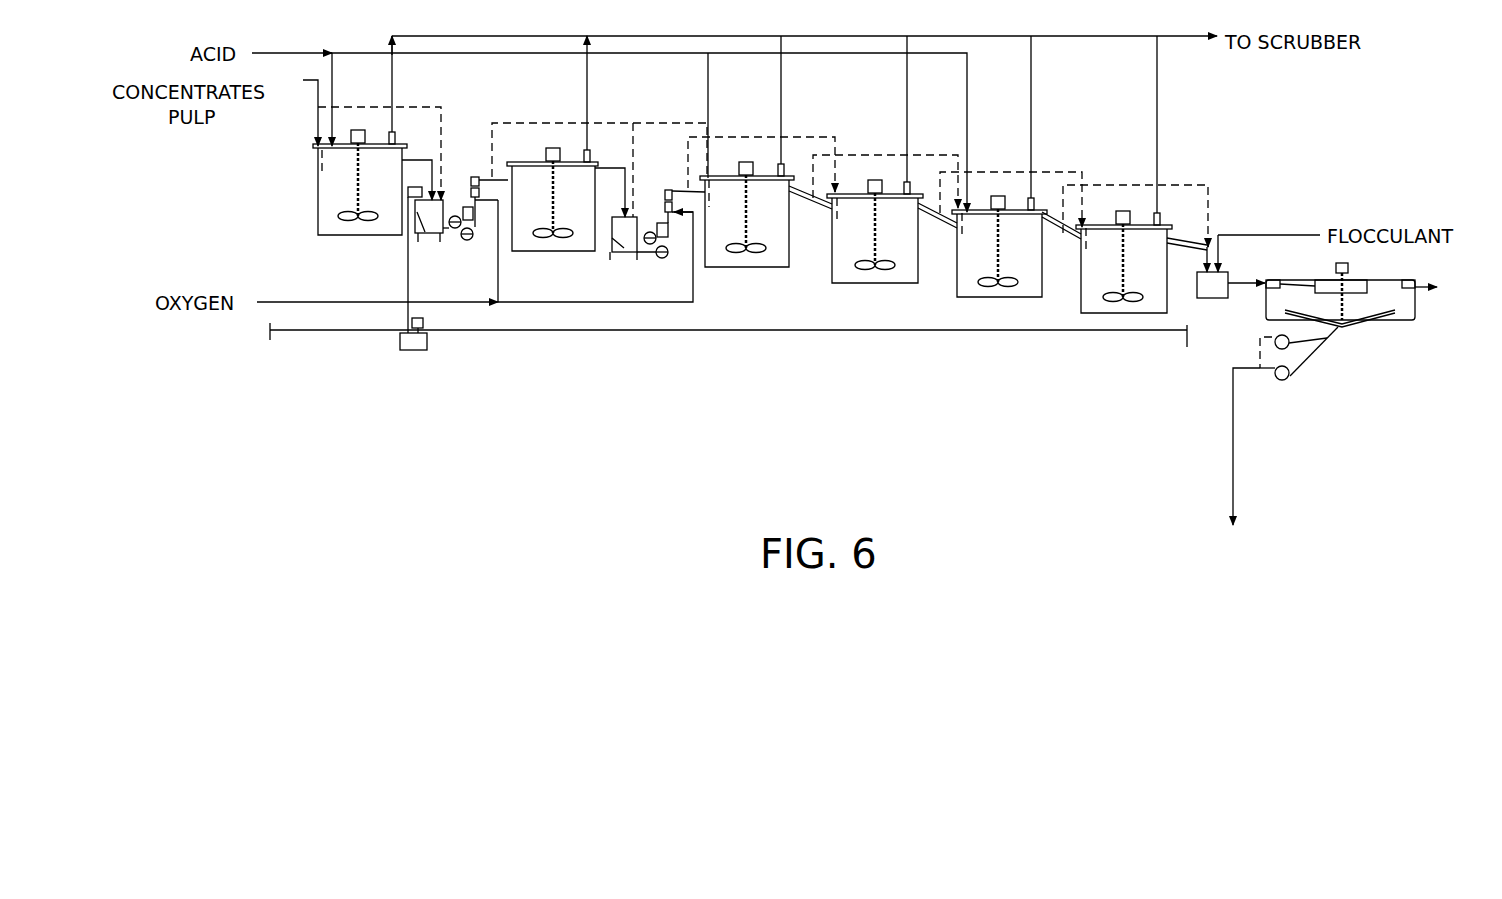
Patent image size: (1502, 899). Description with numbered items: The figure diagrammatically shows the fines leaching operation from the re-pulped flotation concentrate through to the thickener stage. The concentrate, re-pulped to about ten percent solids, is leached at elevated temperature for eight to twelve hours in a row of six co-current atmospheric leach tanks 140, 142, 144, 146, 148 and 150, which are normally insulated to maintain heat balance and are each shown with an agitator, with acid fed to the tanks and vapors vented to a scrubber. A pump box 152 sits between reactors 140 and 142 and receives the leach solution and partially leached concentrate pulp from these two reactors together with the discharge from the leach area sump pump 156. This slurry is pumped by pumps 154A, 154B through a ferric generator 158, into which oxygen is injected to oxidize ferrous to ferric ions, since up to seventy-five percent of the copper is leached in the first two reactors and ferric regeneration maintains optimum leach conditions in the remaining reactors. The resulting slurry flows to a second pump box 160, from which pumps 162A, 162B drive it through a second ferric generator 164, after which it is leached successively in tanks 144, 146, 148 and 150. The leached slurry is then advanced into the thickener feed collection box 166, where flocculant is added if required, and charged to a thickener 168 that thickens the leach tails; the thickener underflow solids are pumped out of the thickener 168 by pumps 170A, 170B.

The co-current atmospheric leach tank 140 is at (323, 212).
The co-current atmospheric leach tank 142 is at (552, 243).
The co-current atmospheric leach tank 144 is at (752, 260).
The co-current atmospheric leach tank 146 is at (878, 273).
The co-current atmospheric leach tank 148 is at (1028, 292).
The co-current atmospheric leach tank 150 is at (1150, 303).
The pump box 152 is at (432, 223).
The pump 154A is at (465, 243).
The pump 154B is at (452, 215).
The leach area sump pump 156 is at (397, 337).
The ferric generator 158 is at (482, 180).
The pump box 160 is at (622, 248).
The pump 162A is at (663, 258).
The pump 162B is at (647, 232).
The ferric generator 164 is at (690, 192).
The thickener feed collection box 166 is at (1215, 293).
The thickener 168 is at (1410, 308).
The pump 170A is at (1287, 383).
The pump 170B is at (1293, 350).